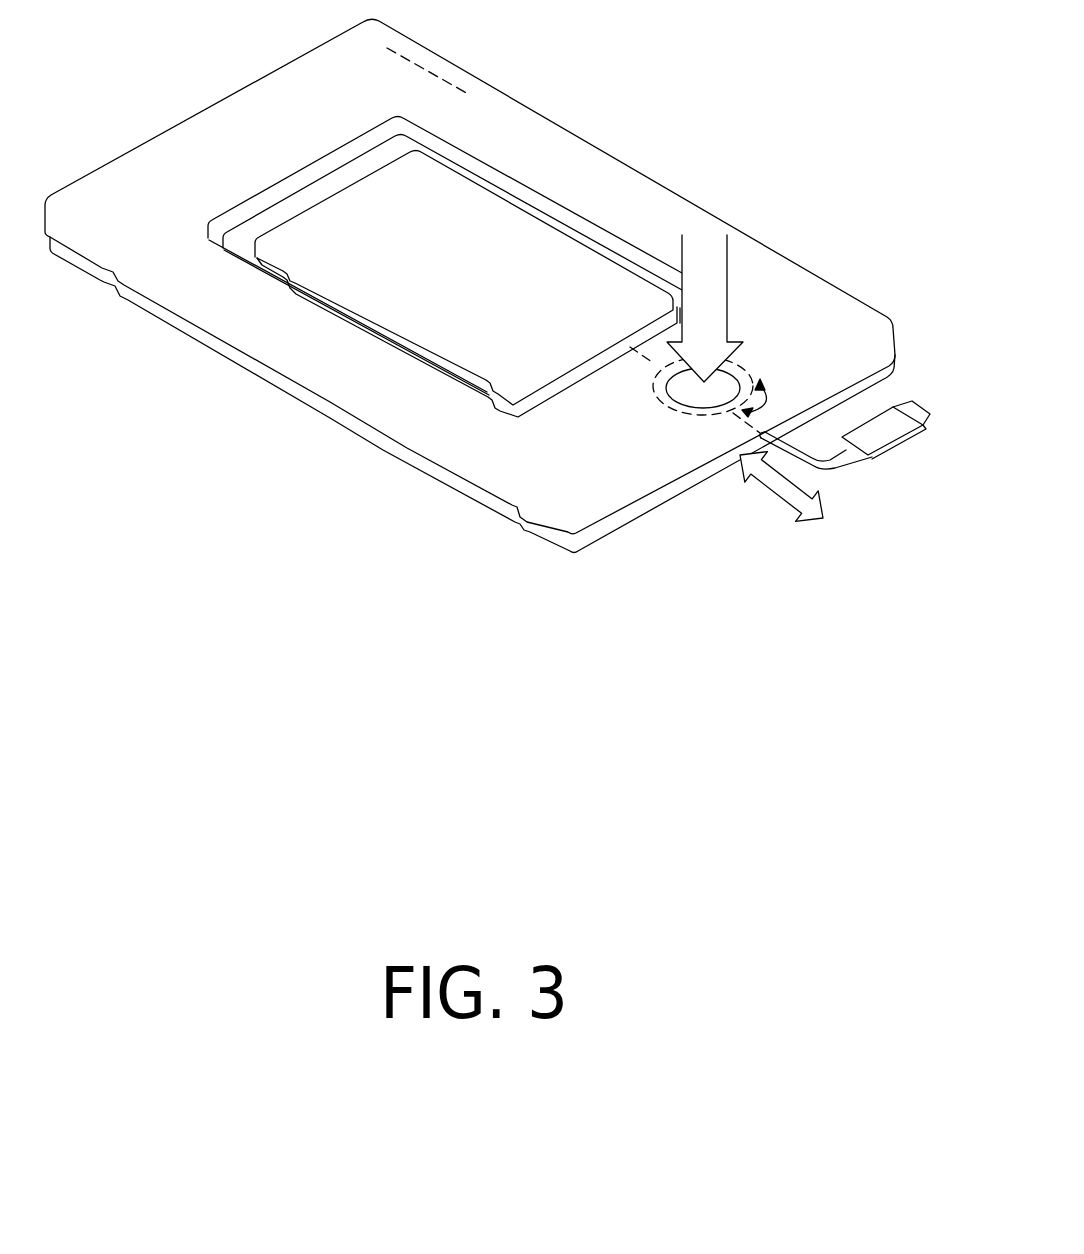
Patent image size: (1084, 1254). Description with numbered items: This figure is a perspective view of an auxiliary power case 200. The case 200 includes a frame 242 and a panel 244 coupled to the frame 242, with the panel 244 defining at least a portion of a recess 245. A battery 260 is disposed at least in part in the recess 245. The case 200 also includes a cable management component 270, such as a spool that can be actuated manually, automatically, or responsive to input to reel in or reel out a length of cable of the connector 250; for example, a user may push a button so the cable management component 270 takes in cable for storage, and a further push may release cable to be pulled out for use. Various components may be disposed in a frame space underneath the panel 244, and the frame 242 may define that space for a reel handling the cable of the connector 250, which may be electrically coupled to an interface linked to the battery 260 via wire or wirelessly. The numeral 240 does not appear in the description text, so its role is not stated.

The auxiliary power case 200 is at (673, 78).
The base housing 240 is at (778, 275).
The frame 242 is at (443, 78).
The panel 244 is at (507, 110).
The recess 245 is at (540, 408).
The connector 250 is at (890, 443).
The battery 260 is at (495, 193).
The cable management component 270 is at (683, 412).